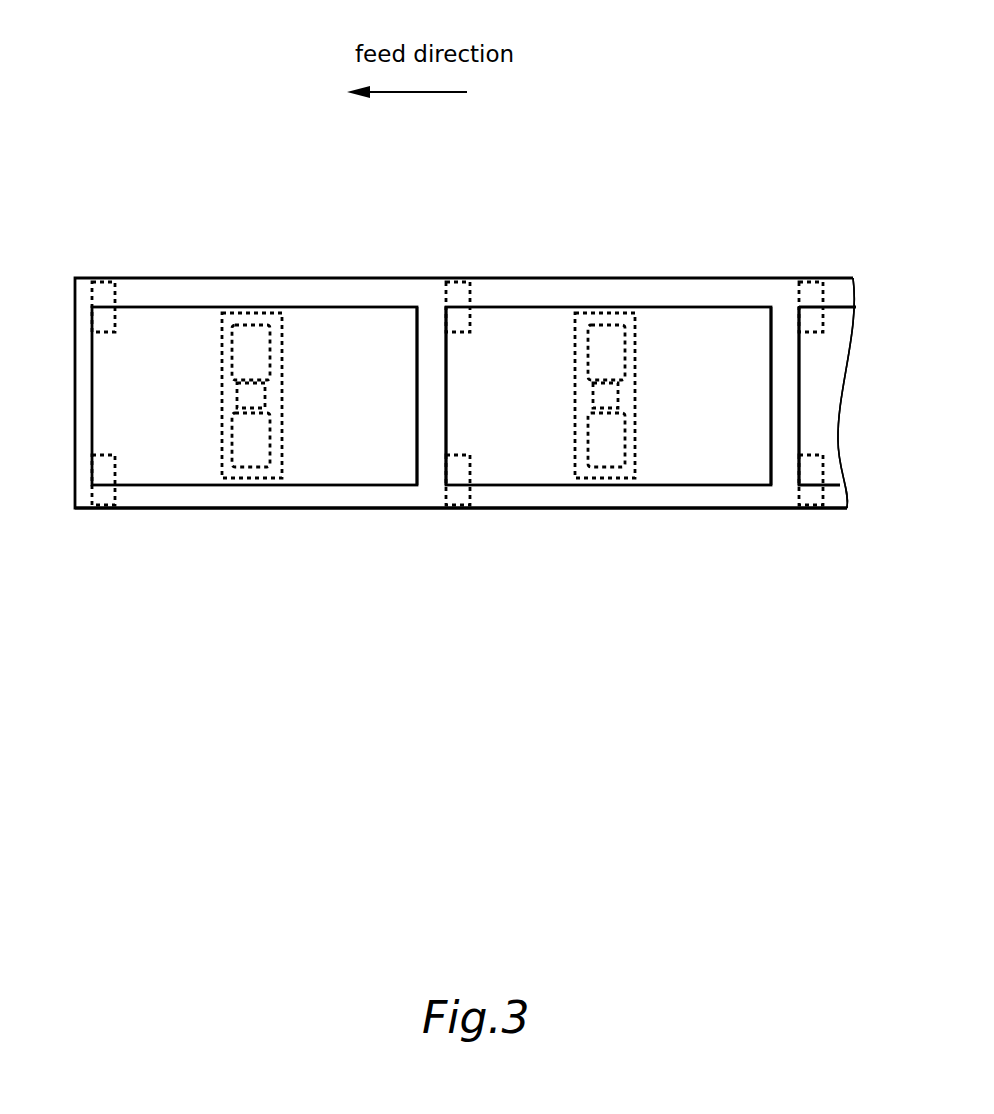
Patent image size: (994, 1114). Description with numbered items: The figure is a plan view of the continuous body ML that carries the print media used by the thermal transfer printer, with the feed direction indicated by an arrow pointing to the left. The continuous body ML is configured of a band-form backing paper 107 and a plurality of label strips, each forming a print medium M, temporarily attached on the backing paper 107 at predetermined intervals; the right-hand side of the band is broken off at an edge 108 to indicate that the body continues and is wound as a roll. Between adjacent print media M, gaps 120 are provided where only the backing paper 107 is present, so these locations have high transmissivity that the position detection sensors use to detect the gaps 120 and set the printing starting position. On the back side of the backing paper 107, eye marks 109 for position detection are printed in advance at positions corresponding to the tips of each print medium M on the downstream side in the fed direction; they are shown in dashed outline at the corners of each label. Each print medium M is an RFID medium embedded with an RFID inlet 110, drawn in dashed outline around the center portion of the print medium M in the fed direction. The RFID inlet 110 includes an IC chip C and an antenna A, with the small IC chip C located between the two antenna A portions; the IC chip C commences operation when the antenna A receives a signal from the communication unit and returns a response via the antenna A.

The continuous body ML is at (580, 197).
The backing paper 107 is at (712, 510).
The edge of base sheet 108 is at (838, 510).
The eye marks 109 is at (102, 290).
The RFID inlet 110 is at (260, 478).
The gaps 120 is at (430, 313).
The print medium M is at (187, 487).
The antenna A is at (252, 325).
The IC chip C is at (262, 397).